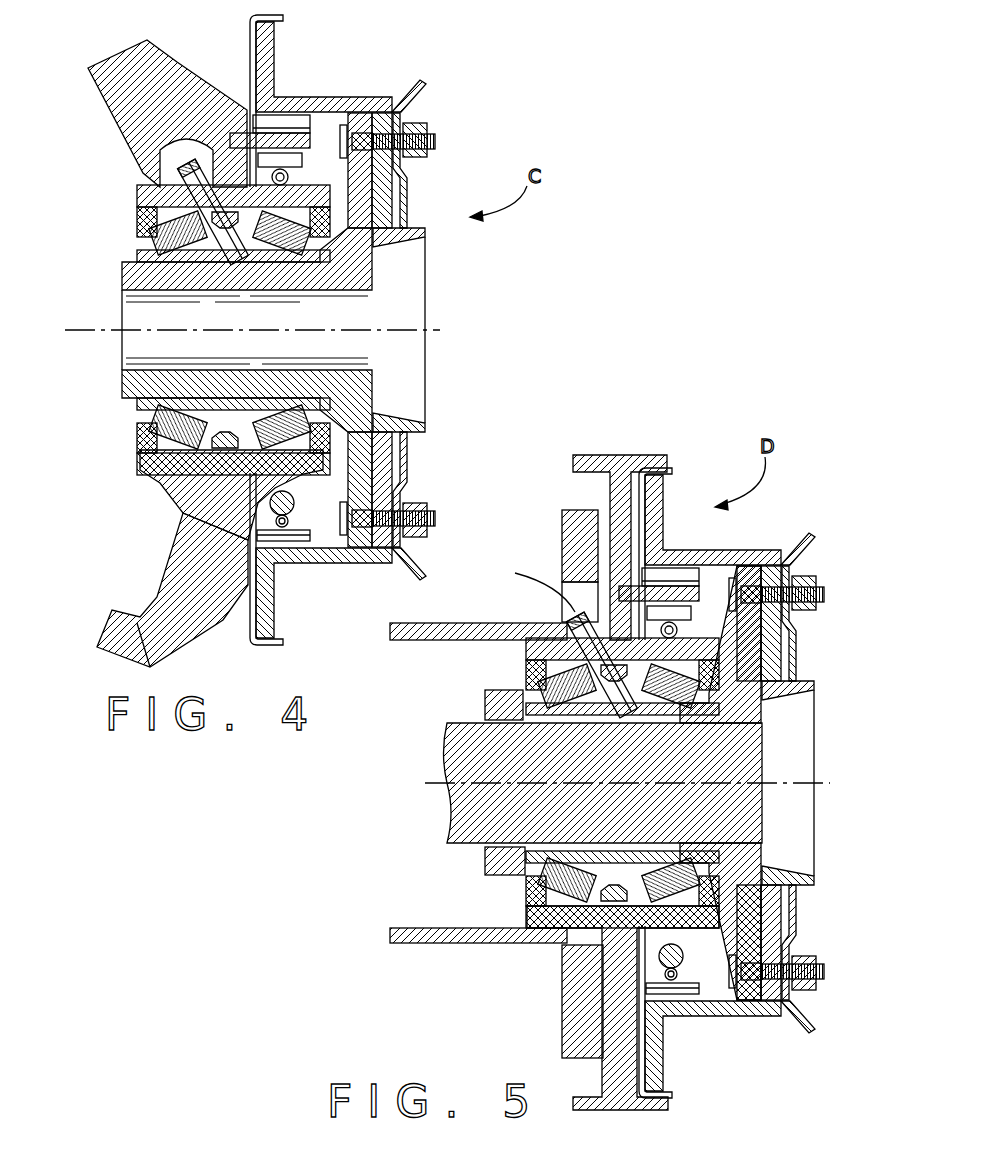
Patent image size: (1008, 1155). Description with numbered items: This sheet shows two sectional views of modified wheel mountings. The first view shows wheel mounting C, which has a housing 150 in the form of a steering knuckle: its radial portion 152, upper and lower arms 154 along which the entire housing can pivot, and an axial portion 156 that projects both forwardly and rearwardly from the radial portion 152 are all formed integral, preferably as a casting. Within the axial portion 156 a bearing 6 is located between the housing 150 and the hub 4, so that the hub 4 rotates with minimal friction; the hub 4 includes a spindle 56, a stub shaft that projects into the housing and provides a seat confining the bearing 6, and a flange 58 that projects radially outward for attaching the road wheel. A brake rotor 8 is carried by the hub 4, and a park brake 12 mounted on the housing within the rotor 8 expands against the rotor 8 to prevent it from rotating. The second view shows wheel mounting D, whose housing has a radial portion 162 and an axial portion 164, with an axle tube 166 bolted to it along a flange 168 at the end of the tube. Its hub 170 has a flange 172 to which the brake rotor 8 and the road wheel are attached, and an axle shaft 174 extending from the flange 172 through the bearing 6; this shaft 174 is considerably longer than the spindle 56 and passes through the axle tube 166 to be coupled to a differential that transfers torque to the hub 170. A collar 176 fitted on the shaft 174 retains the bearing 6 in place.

In FIG. 4, the hub 4 is at (425, 302).
In FIG. 4, the bearing 6 is at (137, 413).
In FIG. 5, the bearing 6 is at (517, 877).
In FIG. 4, the brake rotor 8 is at (332, 563).
In FIG. 5, the brake rotor 8 is at (727, 1013).
In FIG. 4, the park brake 12 is at (313, 132).
In FIG. 5, the park brake 12 is at (710, 581).
In FIG. 4, the spindle 56 is at (122, 298).
In FIG. 4, the flange 58 is at (390, 186).
In FIG. 4, the housing 150 is at (140, 477).
In FIG. 4, the radial portion 152 is at (257, 45).
In FIG. 4, the upper and lower arms 154 is at (113, 107).
In FIG. 4, the axial portion 156 is at (140, 190).
In FIG. 5, the radial portion 162 is at (610, 488).
In FIG. 5, the axial portion 164 is at (527, 917).
In FIG. 5, the axle tube 166 is at (447, 945).
In FIG. 5, the flange 168 is at (578, 1028).
In FIG. 5, the hub 170 is at (813, 733).
In FIG. 5, the flange 172 is at (755, 628).
In FIG. 5, the axle shaft 174 is at (465, 727).
In FIG. 5, the collar 176 is at (497, 690).